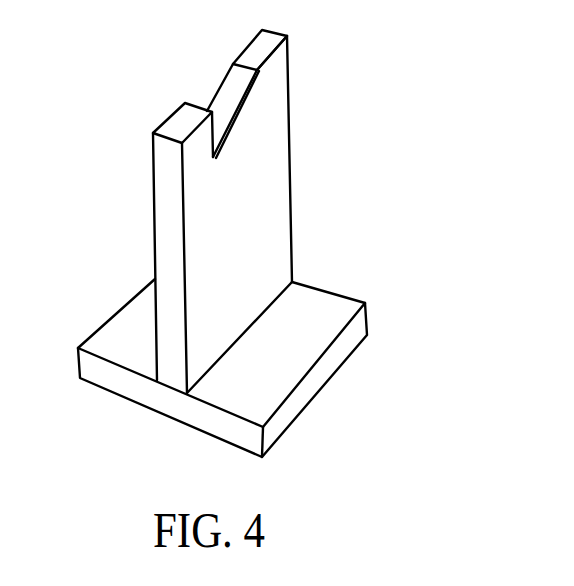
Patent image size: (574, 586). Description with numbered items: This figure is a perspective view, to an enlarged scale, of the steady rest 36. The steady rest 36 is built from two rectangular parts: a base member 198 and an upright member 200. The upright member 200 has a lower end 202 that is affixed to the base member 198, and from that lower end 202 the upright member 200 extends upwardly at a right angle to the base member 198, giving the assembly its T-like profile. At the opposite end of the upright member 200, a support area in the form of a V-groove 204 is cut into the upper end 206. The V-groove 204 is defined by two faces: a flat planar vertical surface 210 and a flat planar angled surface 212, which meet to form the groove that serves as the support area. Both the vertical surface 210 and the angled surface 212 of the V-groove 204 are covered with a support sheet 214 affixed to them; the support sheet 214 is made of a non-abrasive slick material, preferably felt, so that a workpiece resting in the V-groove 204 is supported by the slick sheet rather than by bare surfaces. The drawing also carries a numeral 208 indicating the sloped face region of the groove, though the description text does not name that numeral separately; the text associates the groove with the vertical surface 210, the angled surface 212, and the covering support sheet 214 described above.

The steady rest 36 is at (232, 228).
The base member 198 is at (110, 394).
The upright member 200 is at (151, 203).
The lower end 202 is at (293, 255).
The V-groove 204 is at (201, 76).
The upper end 206 is at (289, 53).
The inclined surface 208 is at (219, 70).
The flat planar vertical surface 210 is at (243, 91).
The flat planar angled surface 212 is at (215, 125).
The support sheet 214 is at (227, 111).